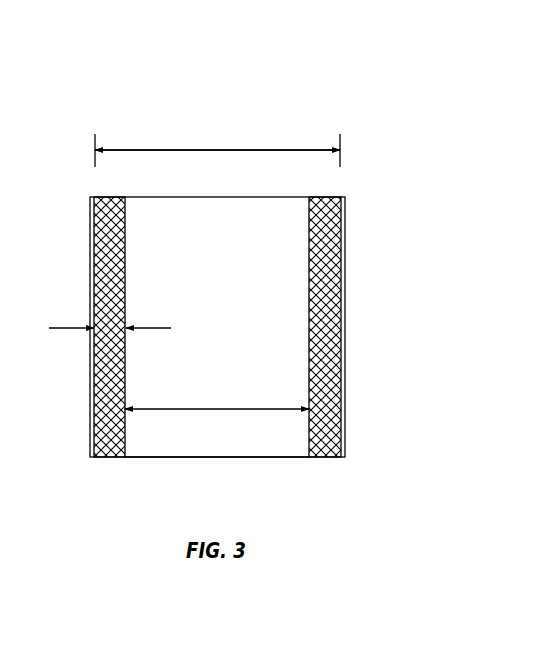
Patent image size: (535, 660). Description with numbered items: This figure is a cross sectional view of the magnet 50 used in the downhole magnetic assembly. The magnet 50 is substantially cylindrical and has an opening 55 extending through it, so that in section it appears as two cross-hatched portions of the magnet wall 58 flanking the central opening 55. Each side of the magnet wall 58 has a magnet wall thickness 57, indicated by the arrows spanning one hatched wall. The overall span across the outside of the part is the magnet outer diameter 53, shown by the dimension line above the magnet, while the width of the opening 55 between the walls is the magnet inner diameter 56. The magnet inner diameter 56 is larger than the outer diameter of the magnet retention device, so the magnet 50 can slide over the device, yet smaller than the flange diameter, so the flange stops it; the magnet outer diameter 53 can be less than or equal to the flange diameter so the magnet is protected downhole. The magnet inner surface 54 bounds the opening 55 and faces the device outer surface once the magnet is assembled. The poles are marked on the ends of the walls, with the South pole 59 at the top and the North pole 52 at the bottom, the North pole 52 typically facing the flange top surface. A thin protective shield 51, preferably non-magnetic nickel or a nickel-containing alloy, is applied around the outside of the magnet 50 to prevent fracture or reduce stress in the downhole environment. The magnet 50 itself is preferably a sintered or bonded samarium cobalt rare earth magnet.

The magnet 50 is at (291, 76).
The protective shield 51 is at (88, 408).
The North pole 52 is at (100, 458).
The magnet outer diameter 53 is at (178, 150).
The magnet inner surface 54 is at (322, 302).
The opening 55 is at (212, 443).
The magnet inner diameter 56 is at (223, 408).
The magnet wall thickness 57 is at (72, 327).
The magnet wall 58 is at (120, 258).
The South pole 59 is at (336, 197).